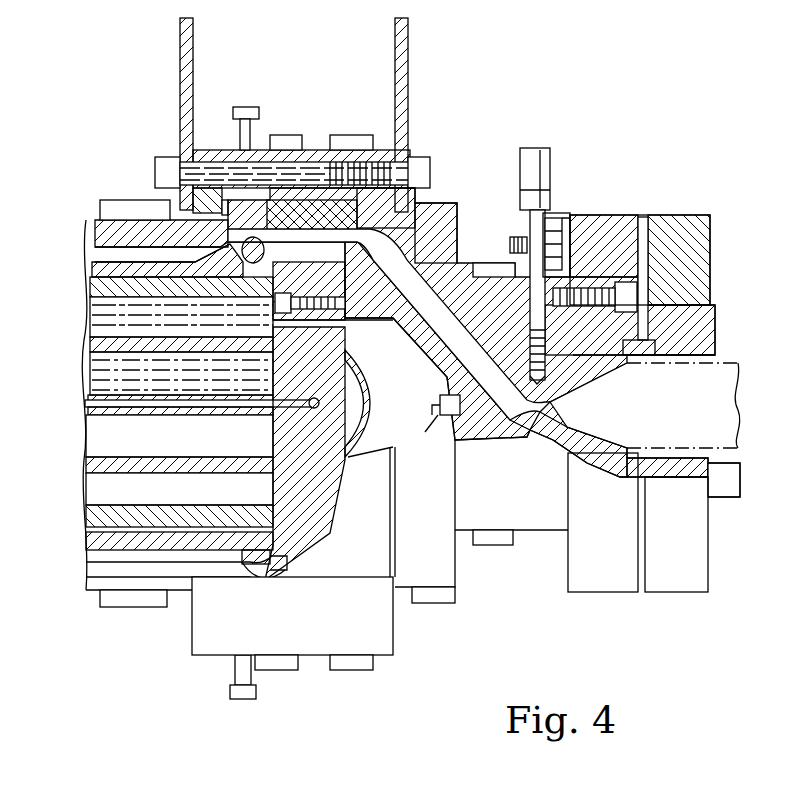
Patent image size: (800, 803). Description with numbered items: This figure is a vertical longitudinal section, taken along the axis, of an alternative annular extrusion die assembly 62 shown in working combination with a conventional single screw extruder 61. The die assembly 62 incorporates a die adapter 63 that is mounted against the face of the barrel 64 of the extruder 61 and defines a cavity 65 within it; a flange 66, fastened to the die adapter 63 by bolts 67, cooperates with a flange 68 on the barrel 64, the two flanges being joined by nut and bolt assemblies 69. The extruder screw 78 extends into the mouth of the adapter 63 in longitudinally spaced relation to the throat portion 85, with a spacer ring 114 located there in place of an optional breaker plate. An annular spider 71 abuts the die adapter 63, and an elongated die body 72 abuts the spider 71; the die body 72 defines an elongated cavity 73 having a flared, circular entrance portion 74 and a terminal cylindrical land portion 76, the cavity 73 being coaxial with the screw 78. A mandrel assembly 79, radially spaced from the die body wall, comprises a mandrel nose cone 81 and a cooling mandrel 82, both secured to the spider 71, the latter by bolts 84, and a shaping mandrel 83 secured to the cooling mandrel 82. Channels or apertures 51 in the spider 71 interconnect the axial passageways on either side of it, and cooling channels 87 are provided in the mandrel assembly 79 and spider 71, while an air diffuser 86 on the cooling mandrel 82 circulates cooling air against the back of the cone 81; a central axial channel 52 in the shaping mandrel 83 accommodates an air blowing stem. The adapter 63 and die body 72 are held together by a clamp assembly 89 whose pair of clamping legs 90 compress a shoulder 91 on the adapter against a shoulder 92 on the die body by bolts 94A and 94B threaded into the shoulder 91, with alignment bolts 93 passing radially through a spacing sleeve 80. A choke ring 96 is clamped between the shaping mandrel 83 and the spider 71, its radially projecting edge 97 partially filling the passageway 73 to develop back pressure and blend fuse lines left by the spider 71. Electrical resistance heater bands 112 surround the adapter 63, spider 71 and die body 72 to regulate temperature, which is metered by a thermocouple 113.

The channels or apertures 51 is at (300, 233).
The central or axial channel 52 is at (82, 404).
The single screw extruder 61 is at (714, 262).
The annular extrusion die assembly 62 is at (463, 192).
The die adapter 63 is at (446, 273).
The barrel 64 is at (705, 325).
The cavity 65 is at (477, 357).
The flange 66 is at (612, 218).
The bolts 67 is at (628, 296).
The flange 68 is at (680, 218).
The nut and bolt assemblies 69 is at (554, 236).
The annular spider 71 is at (352, 208).
The die body 72 is at (96, 233).
The elongated cavity 73 is at (94, 258).
The entrance portion 74 is at (268, 238).
The land portion 76 is at (128, 252).
The screw 78 is at (700, 403).
The mandrel assembly 79 is at (98, 424).
The spacing sleeve 80 is at (210, 150).
The mandrel nose cone 81 is at (486, 441).
The cooling mandrel 82 is at (318, 462).
The shaping mandrel 83 is at (197, 300).
The bolts 84 is at (346, 301).
The throat portion 85 is at (549, 441).
The air diffuser 86 is at (380, 407).
The cooling channels 87 is at (100, 322).
The clamp assembly 89 is at (410, 82).
The clamping legs 90 is at (394, 43).
The shoulder 91 is at (394, 176).
The shoulder 92 is at (258, 188).
The bolts 93 is at (244, 107).
The bolt 94A is at (187, 170).
The bolt 94B is at (430, 174).
The choke ring 96 is at (256, 580).
The radially outwardly projecting edge 97 is at (268, 565).
The electrical resistance heater bands 112 is at (133, 607).
The thermocouple 113 is at (564, 163).
The spacer ring 114 is at (653, 463).